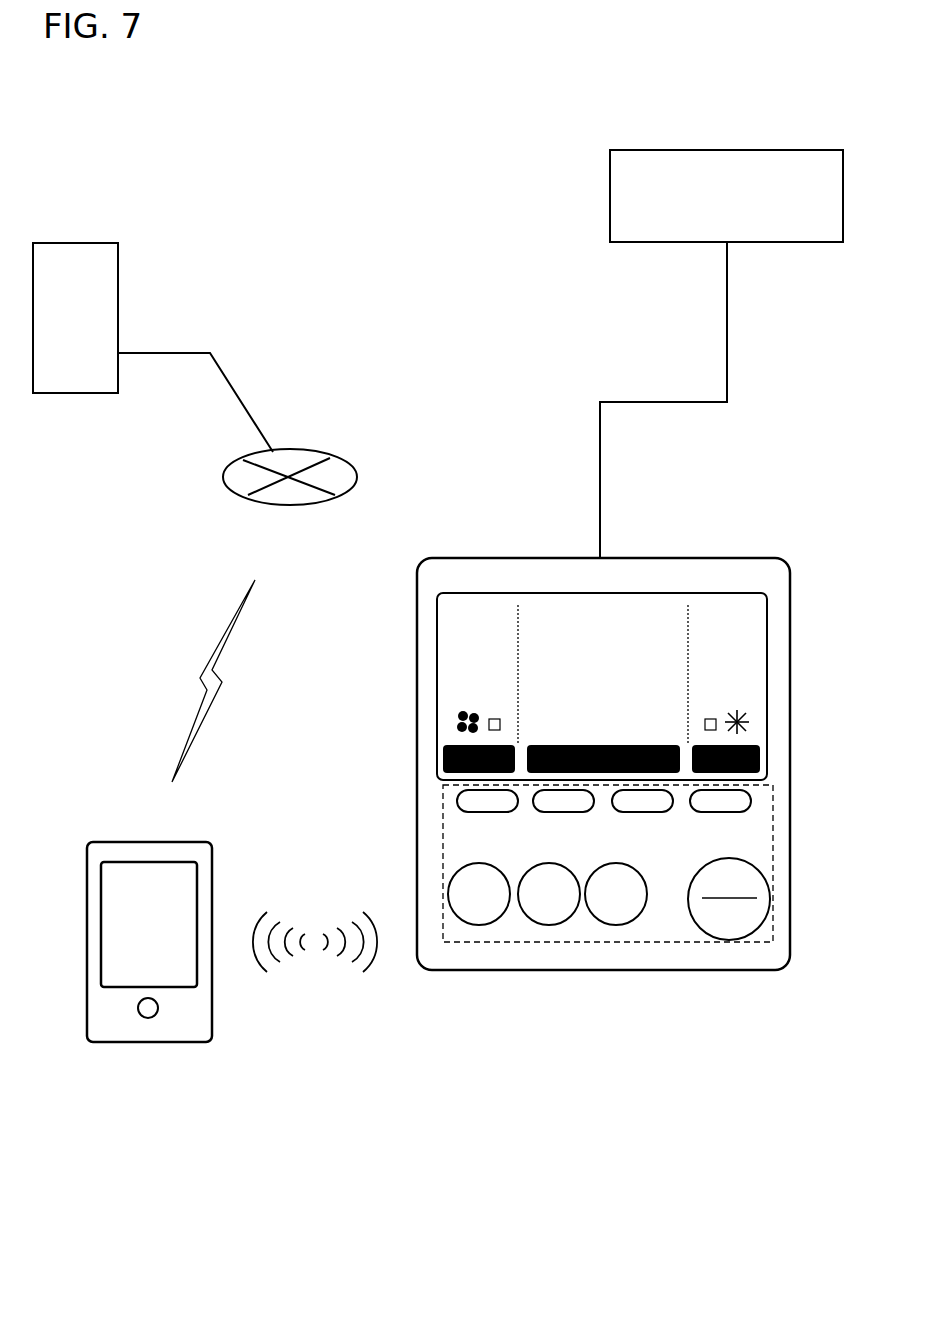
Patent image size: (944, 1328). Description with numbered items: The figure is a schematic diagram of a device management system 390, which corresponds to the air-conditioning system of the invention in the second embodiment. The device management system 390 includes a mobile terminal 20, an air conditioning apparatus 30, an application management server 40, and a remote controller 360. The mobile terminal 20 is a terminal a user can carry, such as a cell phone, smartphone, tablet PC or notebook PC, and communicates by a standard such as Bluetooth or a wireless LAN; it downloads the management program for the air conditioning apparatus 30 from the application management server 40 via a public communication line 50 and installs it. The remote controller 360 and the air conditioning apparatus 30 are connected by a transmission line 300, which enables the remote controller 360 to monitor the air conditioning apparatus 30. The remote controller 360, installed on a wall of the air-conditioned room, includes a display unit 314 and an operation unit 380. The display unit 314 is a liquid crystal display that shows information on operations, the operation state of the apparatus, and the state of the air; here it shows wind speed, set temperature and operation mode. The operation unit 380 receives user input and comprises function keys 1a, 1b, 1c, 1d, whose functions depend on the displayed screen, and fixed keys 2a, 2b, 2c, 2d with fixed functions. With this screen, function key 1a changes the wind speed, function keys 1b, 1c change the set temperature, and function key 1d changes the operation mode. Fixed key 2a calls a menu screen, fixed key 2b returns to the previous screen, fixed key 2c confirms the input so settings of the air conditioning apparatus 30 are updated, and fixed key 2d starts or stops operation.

The mobile terminal 20 is at (122, 1043).
The air conditioning apparatus 30 is at (610, 200).
The application management server 40 is at (60, 243).
The public communication line 50 is at (312, 452).
The transmission line 300 is at (600, 445).
The remote controller 360 is at (737, 547).
The display unit 314 is at (767, 693).
The operation unit 380 is at (656, 899).
The function key 1a is at (488, 812).
The function key 1b is at (563, 812).
The function key 1c is at (642, 812).
The function key 1d is at (722, 812).
The fixed key 2a is at (468, 925).
The fixed key 2b is at (539, 925).
The fixed key 2c is at (606, 925).
The fixed key 2d is at (712, 936).
The device management system 390 is at (335, 1123).